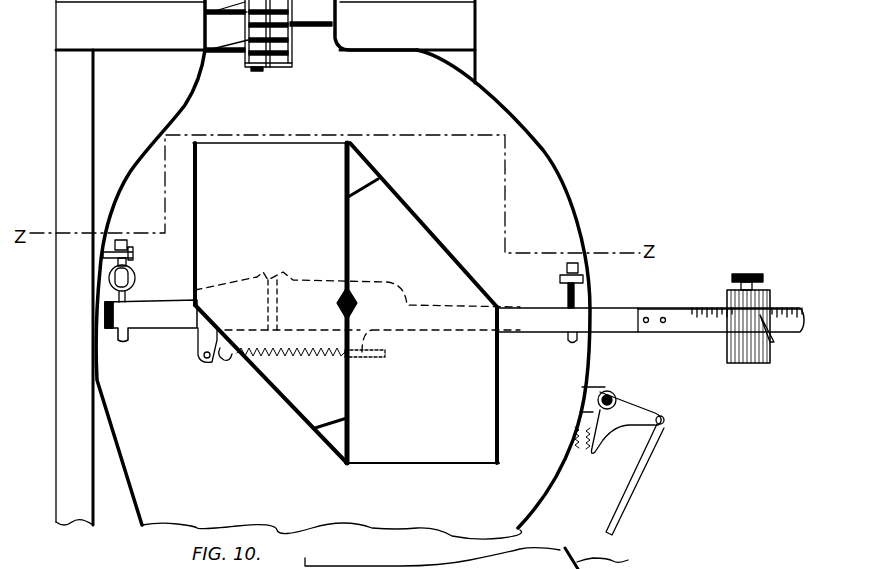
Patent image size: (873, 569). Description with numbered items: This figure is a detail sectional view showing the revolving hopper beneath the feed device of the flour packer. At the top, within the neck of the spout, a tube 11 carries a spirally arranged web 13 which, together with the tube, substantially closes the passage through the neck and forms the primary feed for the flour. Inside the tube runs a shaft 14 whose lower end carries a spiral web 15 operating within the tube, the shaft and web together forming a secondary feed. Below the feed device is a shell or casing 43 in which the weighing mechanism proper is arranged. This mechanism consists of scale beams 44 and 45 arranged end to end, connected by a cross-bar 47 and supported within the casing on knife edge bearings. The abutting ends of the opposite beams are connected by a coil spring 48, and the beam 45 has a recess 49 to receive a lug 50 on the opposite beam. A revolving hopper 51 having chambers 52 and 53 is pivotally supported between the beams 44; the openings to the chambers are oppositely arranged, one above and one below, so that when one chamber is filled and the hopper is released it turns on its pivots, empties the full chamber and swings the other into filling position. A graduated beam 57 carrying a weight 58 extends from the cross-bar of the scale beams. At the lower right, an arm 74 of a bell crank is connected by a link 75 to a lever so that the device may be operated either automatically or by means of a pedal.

The tube 11 is at (246, 22).
The spirally arranged web 13 is at (327, 27).
The shaft 14 is at (272, 68).
The spiral web 15 is at (259, 71).
The shell or casing 43 is at (124, 193).
The scale beam 44 is at (499, 307).
The scale beam 45 is at (150, 291).
The cross-bar 47 is at (104, 316).
The coil spring 48 is at (232, 352).
The recess 49 is at (270, 302).
The lug 50 is at (288, 300).
The revolving hopper 51 is at (352, 262).
The chamber 52 is at (422, 303).
The chamber 53 is at (271, 303).
The graduated beam 57 is at (689, 325).
The weight 58 is at (748, 365).
The arm of bell crank 74 is at (633, 420).
The link 75 is at (665, 440).